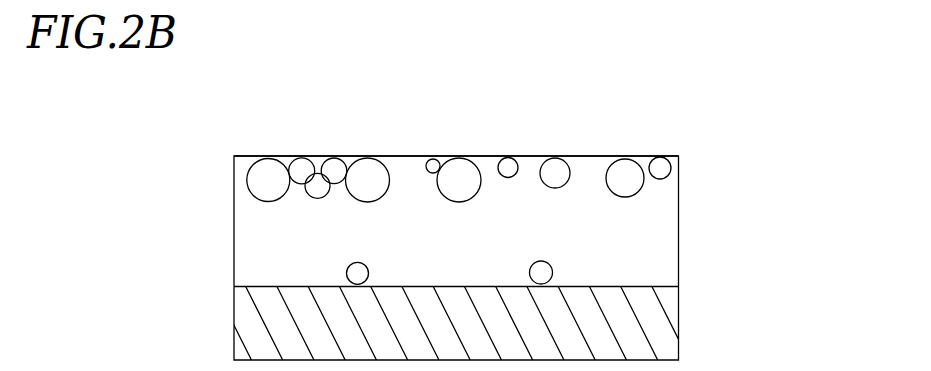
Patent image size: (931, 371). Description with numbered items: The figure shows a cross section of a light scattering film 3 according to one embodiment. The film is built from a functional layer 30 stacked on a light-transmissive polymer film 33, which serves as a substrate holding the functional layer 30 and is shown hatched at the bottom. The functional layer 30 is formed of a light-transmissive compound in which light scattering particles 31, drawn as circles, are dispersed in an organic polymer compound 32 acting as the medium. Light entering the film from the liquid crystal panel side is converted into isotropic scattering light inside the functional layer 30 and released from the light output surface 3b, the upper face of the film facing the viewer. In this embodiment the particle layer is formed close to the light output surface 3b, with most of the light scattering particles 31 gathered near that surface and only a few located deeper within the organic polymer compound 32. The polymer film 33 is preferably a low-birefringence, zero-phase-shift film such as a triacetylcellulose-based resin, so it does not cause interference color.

The light scattering film 3 is at (529, 209).
The light output surface 3b is at (315, 153).
The functional layer 30 is at (535, 172).
The light scattering particles 31 is at (627, 182).
The organic polymer compound 32 is at (650, 227).
The light-transmissive polymer film 33 is at (640, 327).